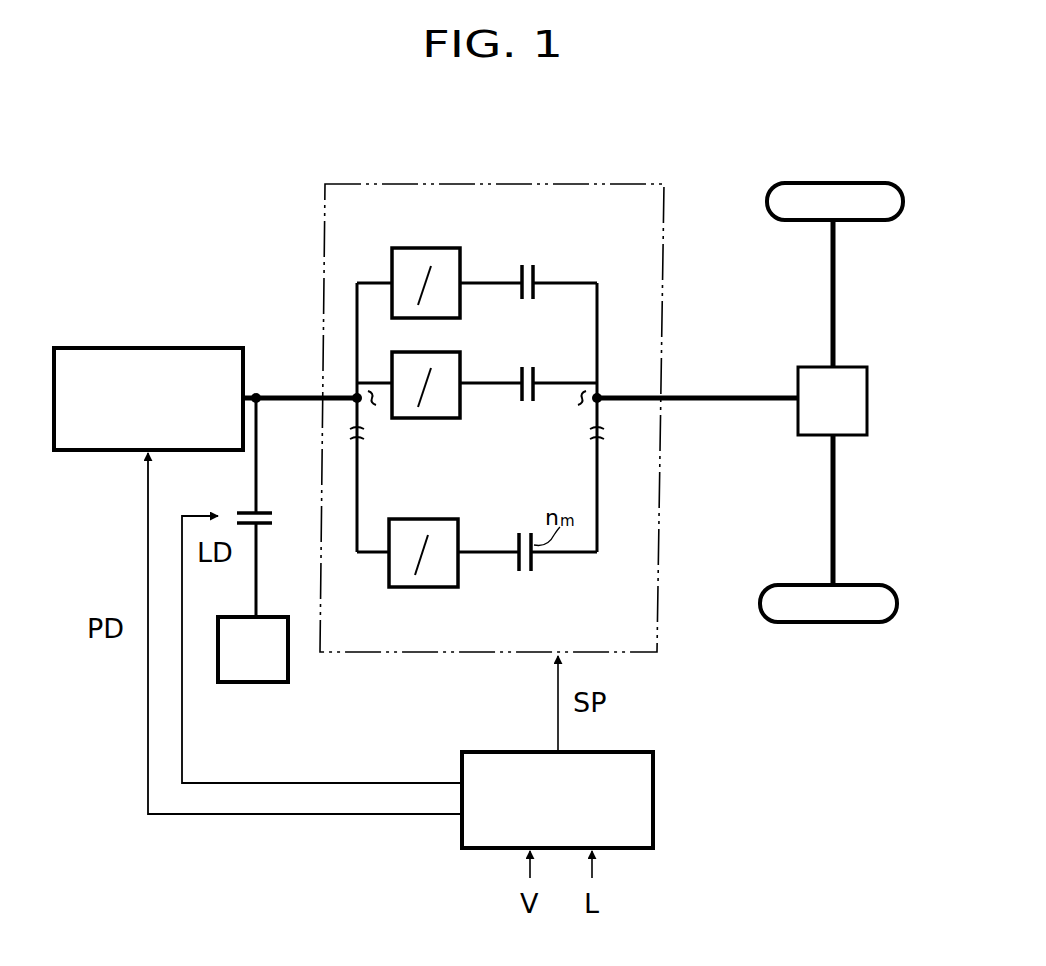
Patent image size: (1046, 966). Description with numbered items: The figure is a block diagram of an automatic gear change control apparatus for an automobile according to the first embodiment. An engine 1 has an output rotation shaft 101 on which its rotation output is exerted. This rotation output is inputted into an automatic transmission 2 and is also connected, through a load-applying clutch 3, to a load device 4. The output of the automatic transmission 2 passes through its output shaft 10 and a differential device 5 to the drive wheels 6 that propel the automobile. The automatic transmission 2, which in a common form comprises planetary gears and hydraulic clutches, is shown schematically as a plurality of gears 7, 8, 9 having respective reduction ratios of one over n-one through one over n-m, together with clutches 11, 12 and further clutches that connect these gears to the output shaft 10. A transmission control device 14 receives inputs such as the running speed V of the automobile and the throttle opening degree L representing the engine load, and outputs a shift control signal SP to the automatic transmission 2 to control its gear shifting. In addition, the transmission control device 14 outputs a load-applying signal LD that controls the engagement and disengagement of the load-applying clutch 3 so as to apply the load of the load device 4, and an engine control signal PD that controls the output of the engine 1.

The engine 1 is at (186, 348).
The output rotation shaft 101 is at (279, 388).
The automatic transmission 2 is at (461, 184).
The load-applying clutch 3 is at (267, 506).
The load device 4 is at (256, 682).
The differential device 5 is at (867, 393).
The drive wheels 6 is at (871, 183).
The gear 7 is at (460, 266).
The gear 8 is at (460, 368).
The gear 9 is at (458, 535).
The output shaft 10 is at (713, 403).
The clutch 11 is at (536, 276).
The clutch 12 is at (536, 376).
The transmission control device 14 is at (653, 796).